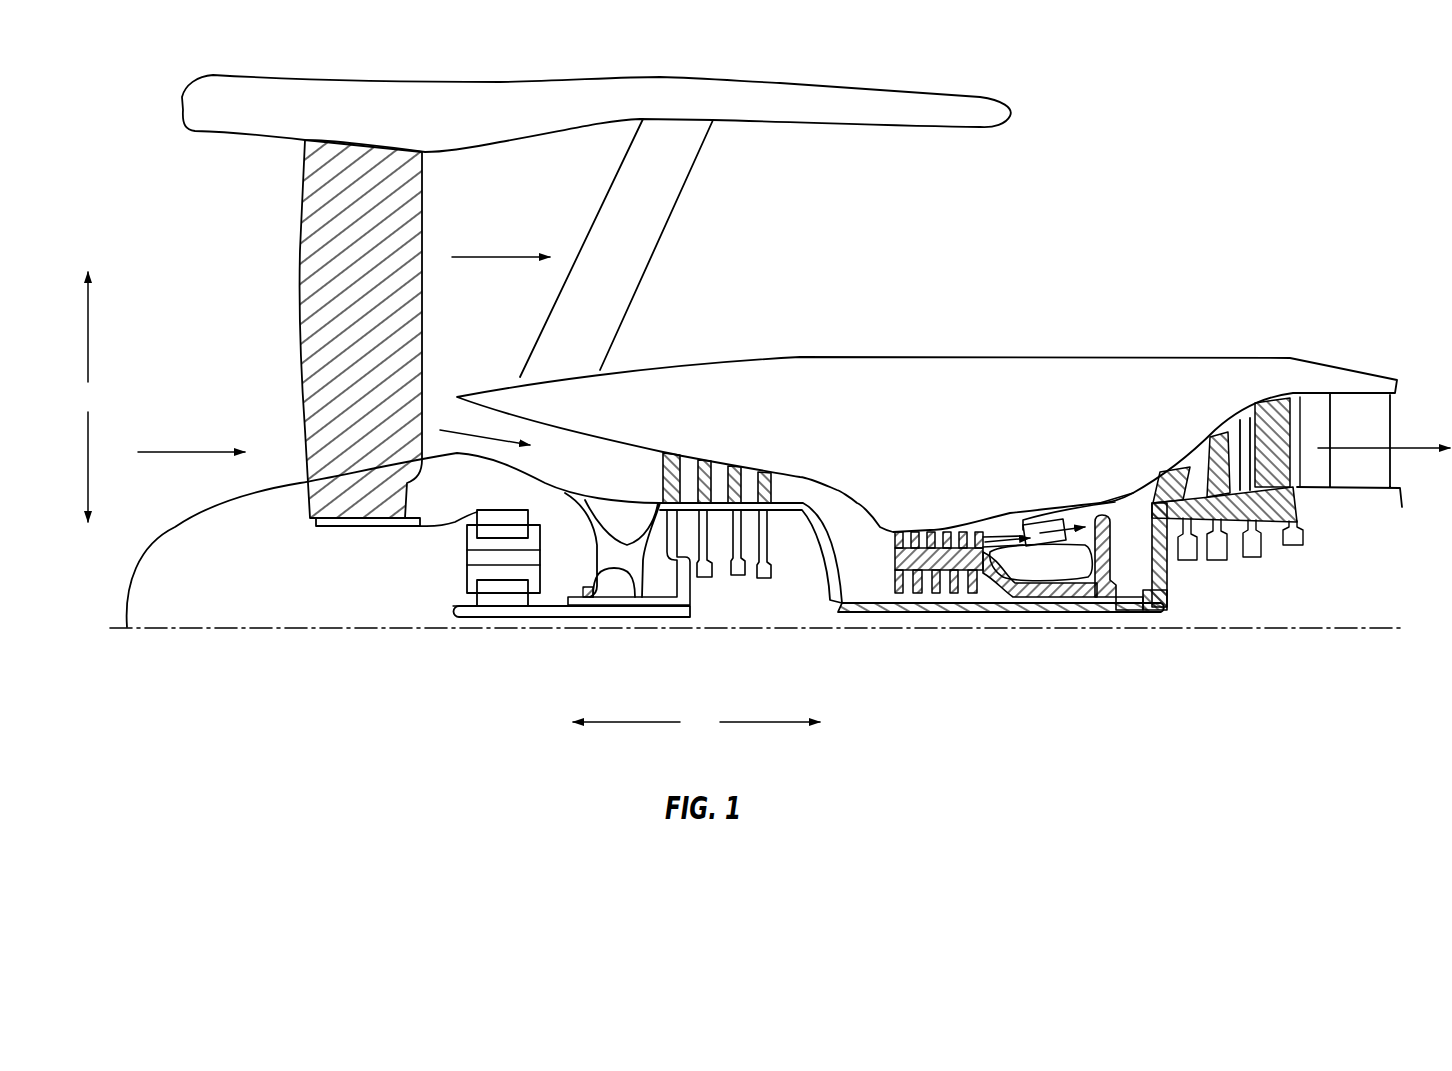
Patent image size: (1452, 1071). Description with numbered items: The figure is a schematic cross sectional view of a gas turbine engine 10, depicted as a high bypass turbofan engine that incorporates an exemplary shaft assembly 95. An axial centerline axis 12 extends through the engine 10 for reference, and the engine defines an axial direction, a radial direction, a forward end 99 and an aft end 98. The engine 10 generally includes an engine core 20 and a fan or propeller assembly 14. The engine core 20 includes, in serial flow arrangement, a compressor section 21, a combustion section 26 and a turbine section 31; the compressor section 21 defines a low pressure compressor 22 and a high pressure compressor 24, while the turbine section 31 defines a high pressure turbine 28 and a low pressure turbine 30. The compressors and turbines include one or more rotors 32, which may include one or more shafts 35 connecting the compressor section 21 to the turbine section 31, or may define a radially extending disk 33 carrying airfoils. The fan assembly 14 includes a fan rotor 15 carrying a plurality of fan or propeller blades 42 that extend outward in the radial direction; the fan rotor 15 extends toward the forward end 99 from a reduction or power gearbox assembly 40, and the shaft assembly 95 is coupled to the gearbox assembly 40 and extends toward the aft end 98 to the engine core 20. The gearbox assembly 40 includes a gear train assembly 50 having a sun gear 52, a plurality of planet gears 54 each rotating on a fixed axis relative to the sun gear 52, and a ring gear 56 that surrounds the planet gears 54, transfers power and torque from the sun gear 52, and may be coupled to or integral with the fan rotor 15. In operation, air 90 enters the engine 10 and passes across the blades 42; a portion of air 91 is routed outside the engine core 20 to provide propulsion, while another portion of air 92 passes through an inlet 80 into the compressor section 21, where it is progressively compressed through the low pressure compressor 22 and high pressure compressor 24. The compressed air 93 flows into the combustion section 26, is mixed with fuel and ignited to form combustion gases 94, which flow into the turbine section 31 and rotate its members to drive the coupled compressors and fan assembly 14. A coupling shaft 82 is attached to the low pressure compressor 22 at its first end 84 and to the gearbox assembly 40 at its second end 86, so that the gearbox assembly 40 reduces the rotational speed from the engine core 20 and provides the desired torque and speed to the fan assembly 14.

The gas turbine engine 10 is at (1130, 165).
The axial centerline axis 12 is at (256, 632).
The fan or propeller assembly 14 is at (297, 430).
The fan rotor 15 is at (420, 530).
The engine core 20 is at (882, 360).
The compressor section 21 is at (927, 451).
The low pressure compressor 22 is at (737, 448).
The high pressure compressor 24 is at (935, 530).
The combustion section 26 is at (1077, 466).
The high pressure turbine 28 is at (1100, 520).
The low pressure turbine 30 is at (1200, 455).
The turbine section 31 is at (1226, 421).
The rotor 32 is at (757, 577).
The disk 33 is at (710, 560).
The shaft 35 is at (917, 612).
The gearbox assembly 40 is at (530, 543).
The fan or propeller blades 42 is at (313, 241).
The gear train assembly 50 is at (458, 545).
The sun gear 52 is at (520, 605).
The planet gears 54 is at (513, 513).
The ring gear 56 is at (497, 509).
The inlet 80 is at (447, 400).
The coupling shaft 82 is at (576, 620).
The first end 84 is at (620, 607).
The second end 86 is at (463, 610).
The air 90 is at (172, 451).
The bypass air 91 is at (486, 255).
The core air 92 is at (492, 435).
The compressed air 93 is at (1003, 530).
The combustion gases 94 is at (1057, 523).
The shaft assembly 95 is at (520, 620).
The aft end 98 is at (1418, 569).
The forward end 99 is at (78, 574).